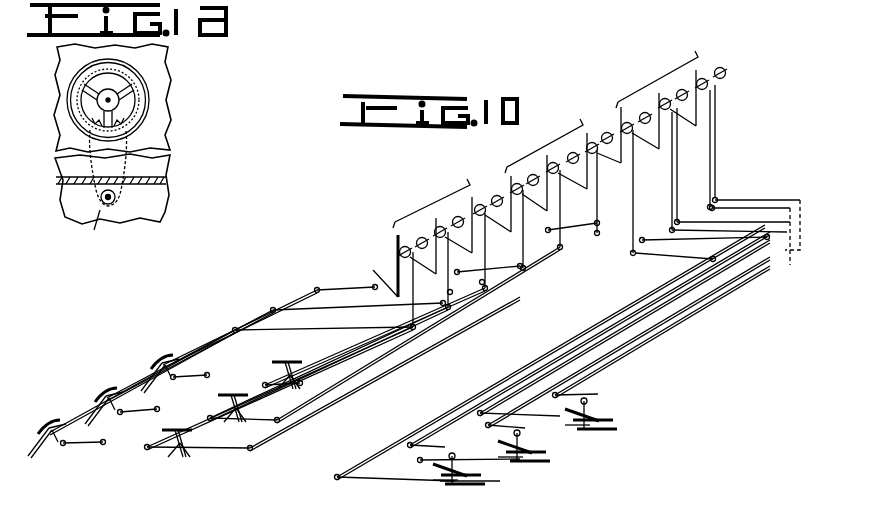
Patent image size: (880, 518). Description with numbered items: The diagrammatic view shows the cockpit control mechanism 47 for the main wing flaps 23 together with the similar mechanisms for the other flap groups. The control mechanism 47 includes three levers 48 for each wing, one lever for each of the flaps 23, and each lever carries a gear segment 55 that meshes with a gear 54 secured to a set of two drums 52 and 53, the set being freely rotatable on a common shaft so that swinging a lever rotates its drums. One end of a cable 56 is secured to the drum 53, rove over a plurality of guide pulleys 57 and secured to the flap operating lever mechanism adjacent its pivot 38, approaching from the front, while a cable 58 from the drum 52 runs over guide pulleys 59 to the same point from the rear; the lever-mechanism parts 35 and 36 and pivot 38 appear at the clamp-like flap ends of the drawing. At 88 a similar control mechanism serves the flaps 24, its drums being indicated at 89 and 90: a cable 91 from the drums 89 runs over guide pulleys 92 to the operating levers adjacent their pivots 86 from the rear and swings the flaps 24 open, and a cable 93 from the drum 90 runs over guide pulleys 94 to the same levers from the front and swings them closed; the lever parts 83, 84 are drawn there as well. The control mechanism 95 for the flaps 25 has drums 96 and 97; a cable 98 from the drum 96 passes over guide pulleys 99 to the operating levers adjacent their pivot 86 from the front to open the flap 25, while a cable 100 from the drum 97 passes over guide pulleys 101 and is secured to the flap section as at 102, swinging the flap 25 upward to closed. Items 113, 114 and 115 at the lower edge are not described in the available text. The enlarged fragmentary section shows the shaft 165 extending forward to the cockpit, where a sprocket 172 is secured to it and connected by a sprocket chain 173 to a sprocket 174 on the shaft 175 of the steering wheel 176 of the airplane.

In FIG. 10, the flaps 23 is at (53, 421).
In FIG. 10, the flaps 24 is at (232, 389).
In FIG. 10, the flaps 25 is at (462, 484).
In FIG. 10, the clamp arm 35 is at (122, 397).
In FIG. 10, the clamp stem 36 is at (42, 462).
In FIG. 10, the pivot 38 is at (60, 444).
In FIG. 10, the control mechanism 47 is at (428, 205).
In FIG. 10, the levers 48 is at (400, 246).
In FIG. 10, the drum 52 is at (402, 246).
In FIG. 10, the drum 53 is at (420, 237).
In FIG. 10, the gear 54 is at (396, 250).
In FIG. 10, the gear segment 55 is at (380, 268).
In FIG. 10, the cable 56 is at (76, 418).
In FIG. 10, the guide pulleys 57 is at (58, 445).
In FIG. 10, the cable 58 is at (85, 448).
In FIG. 10, the guide pulleys 59 is at (106, 448).
In FIG. 10, the clamp leg 83 is at (400, 436).
In FIG. 10, the clamp arm 84 is at (395, 425).
In FIG. 10, the pivot 86 is at (400, 440).
In FIG. 10, the control mechanism 88 is at (552, 140).
In FIG. 10, the drums 89 is at (555, 156).
In FIG. 10, the drum 90 is at (571, 150).
In FIG. 10, the cable 91 is at (228, 452).
In FIG. 10, the guide pulleys 92 is at (264, 446).
In FIG. 10, the cable 93 is at (221, 425).
In FIG. 10, the guide pulleys 94 is at (600, 230).
In FIG. 10, the control mechanism 95 is at (659, 78).
In FIG. 10, the drum 96 is at (706, 66).
In FIG. 10, the drum 97 is at (732, 67).
In FIG. 10, the cable 98 is at (375, 490).
In FIG. 10, the guide pulleys 99 is at (340, 478).
In FIG. 10, the cable 100 is at (448, 457).
In FIG. 10, the guide pulleys 101 is at (775, 263).
In FIG. 10, the attachment point 102 is at (506, 456).
In FIG. 10, the cam 113 is at (600, 513).
In FIG. 10, the cam 114 is at (645, 512).
In FIG. 10, the cam 115 is at (690, 513).
In FIG. 18, the shaft 165 is at (89, 228).
In FIG. 18, the sprocket 172 is at (116, 198).
In FIG. 18, the sprocket chain 173 is at (150, 168).
In FIG. 18, the sprocket 174 is at (90, 106).
In FIG. 18, the shaft 175 is at (118, 88).
In FIG. 18, the steering wheel 176 is at (144, 120).